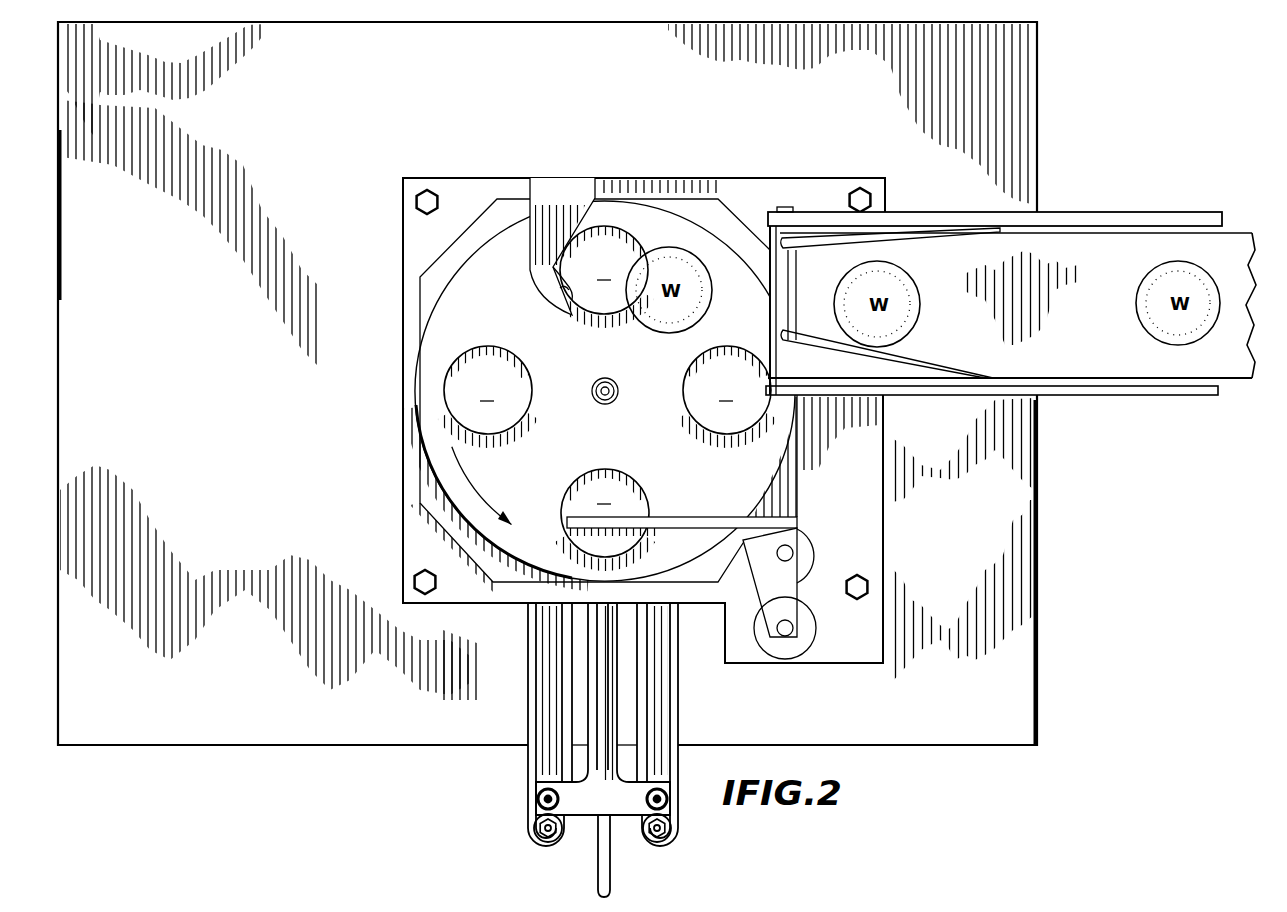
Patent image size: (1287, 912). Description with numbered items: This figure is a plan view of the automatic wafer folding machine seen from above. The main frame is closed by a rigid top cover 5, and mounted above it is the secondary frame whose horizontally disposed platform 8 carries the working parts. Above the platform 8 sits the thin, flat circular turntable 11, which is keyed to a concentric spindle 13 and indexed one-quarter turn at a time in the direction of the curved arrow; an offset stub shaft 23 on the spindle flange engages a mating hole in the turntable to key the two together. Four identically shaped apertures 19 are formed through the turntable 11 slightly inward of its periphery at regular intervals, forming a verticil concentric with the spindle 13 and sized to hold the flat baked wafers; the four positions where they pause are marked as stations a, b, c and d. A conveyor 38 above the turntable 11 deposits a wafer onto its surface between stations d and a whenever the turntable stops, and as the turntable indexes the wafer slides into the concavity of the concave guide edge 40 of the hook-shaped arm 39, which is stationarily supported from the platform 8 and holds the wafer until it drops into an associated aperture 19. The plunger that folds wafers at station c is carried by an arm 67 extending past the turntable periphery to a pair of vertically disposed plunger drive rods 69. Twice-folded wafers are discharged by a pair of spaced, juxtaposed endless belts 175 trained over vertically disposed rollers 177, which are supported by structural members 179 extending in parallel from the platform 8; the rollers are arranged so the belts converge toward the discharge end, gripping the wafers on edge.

The top cover 5 is at (295, 151).
The platform 8 is at (791, 196).
The turntable 11 is at (440, 431).
The spindle 13 is at (598, 398).
The apertures 19 is at (593, 302).
The offset stub shaft 23 is at (430, 266).
The conveyor 38 is at (1097, 247).
The hook-shaped arm 39 is at (538, 212).
The concave guide edge 40 is at (557, 296).
The arm 67 is at (792, 594).
The plunger drive rods 69 is at (793, 550).
The endless belts 175 is at (528, 758).
The rollers 177 is at (530, 826).
The structural members 179 is at (545, 696).